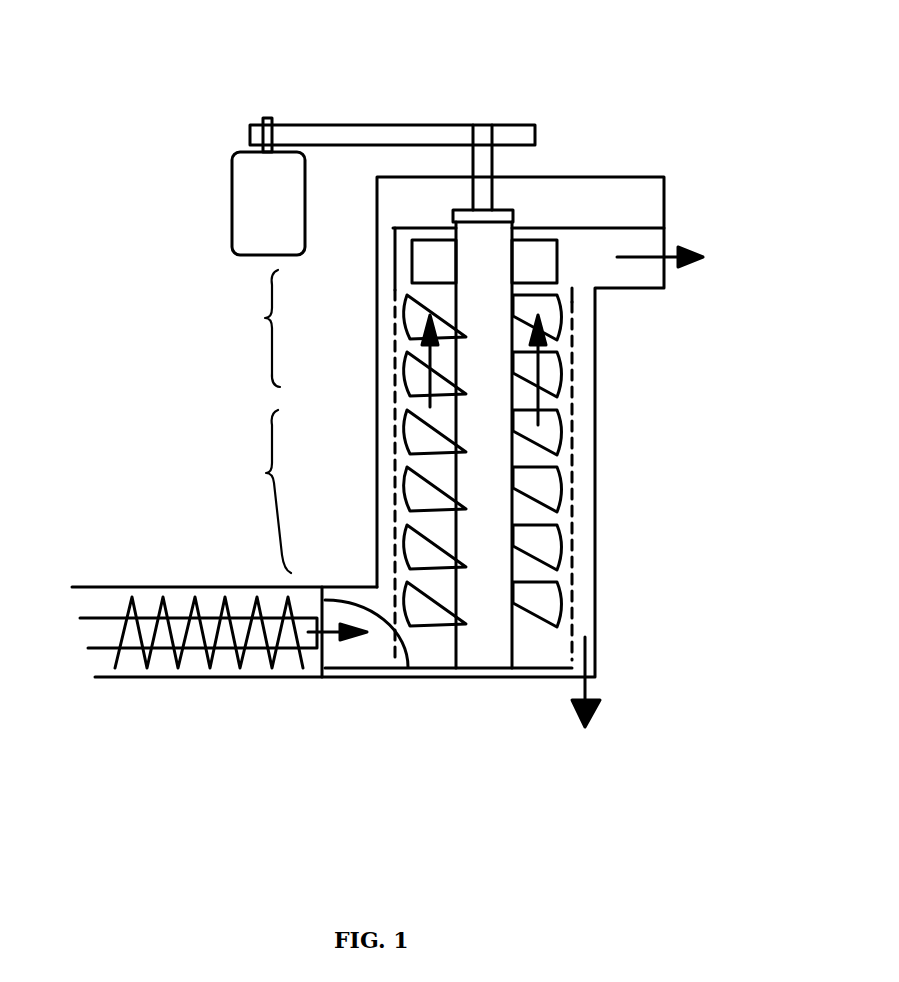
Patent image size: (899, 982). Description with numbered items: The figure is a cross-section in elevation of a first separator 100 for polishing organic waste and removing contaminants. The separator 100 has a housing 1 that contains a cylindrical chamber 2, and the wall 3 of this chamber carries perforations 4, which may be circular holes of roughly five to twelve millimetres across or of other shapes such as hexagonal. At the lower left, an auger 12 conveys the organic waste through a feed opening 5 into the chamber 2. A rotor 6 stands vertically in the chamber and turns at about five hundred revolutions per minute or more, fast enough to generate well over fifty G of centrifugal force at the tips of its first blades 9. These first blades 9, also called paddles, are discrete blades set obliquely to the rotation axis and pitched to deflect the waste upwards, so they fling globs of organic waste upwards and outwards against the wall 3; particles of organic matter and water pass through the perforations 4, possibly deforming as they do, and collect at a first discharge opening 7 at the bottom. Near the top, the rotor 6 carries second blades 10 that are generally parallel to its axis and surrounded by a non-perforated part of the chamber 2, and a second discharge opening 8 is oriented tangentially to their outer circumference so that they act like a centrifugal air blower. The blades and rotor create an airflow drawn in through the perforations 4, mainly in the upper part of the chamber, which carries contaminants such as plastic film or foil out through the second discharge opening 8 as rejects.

The first separator 100 is at (145, 88).
The housing 1 is at (598, 495).
The cylindrical chamber 2 is at (536, 641).
The wall 3 is at (572, 570).
The perforations 4 is at (572, 400).
The feed opening 5 is at (372, 655).
The rotor 6 is at (383, 393).
The first discharge opening 7 is at (585, 620).
The second discharge opening 8 is at (648, 278).
The first blades 9 is at (428, 490).
The second blades 10 is at (532, 254).
The auger 12 is at (228, 640).